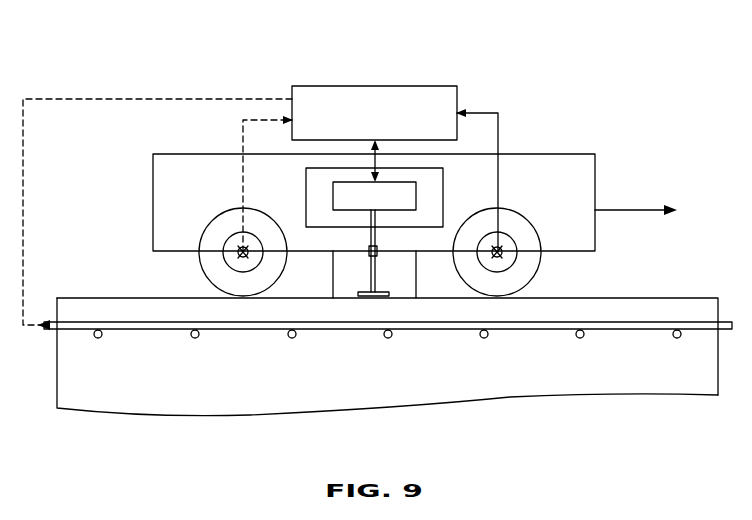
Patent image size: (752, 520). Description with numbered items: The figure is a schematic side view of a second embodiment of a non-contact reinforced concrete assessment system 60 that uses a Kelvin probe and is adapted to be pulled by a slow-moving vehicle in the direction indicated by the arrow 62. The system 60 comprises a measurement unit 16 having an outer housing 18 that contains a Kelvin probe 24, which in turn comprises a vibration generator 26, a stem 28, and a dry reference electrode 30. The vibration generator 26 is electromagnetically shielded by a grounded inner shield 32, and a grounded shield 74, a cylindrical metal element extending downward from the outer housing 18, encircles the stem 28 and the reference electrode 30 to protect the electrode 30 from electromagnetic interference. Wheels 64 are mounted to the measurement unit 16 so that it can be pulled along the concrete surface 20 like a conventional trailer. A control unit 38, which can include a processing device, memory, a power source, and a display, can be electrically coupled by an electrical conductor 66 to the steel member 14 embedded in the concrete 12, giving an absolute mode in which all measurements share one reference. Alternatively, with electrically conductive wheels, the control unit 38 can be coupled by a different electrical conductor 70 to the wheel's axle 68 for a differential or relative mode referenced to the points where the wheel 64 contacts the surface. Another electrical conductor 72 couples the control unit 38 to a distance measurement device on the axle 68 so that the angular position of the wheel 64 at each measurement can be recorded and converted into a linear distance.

The concrete 12 is at (100, 405).
The steel member 14 is at (522, 325).
The measurement unit 16 is at (618, 168).
The outer housing 18 is at (153, 180).
The concrete surface 20 is at (657, 298).
The Kelvin probe 24 is at (285, 201).
The vibration generator 26 is at (374, 175).
The stem 28 is at (370, 243).
The dry reference electrode 30 is at (360, 292).
The inner shield 32 is at (443, 204).
The control unit 38 is at (374, 113).
The non-contact reinforced concrete assessment system 60 is at (660, 58).
The arrow 62 is at (628, 213).
The wheels 64 is at (198, 226).
The electrical conductor 66 is at (130, 99).
The axle 68 is at (243, 256).
The electrical conductor 70 is at (242, 131).
The electrical conductor 72 is at (500, 125).
The grounded shield 74 is at (420, 292).